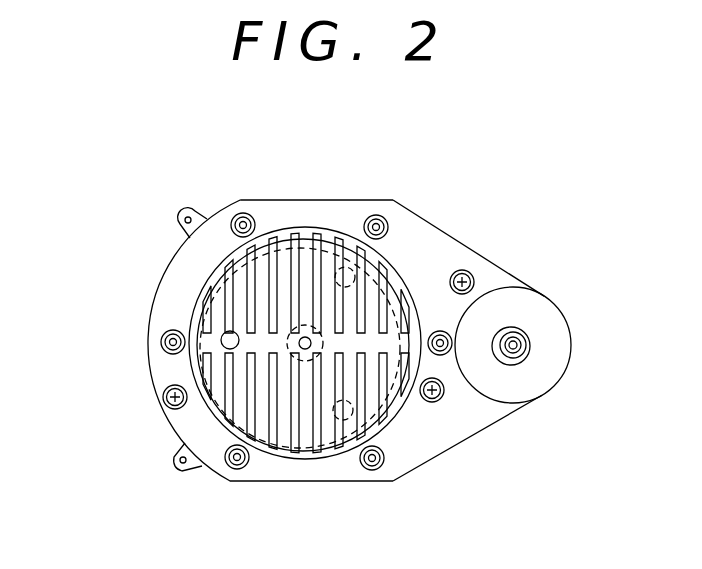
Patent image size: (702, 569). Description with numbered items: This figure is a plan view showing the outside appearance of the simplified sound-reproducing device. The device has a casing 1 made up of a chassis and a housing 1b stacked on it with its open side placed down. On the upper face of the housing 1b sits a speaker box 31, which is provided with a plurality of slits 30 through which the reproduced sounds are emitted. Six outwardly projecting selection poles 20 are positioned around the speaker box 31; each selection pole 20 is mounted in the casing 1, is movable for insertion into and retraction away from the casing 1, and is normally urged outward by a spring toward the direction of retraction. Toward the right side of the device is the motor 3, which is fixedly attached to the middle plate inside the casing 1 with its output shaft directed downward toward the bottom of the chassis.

The casing 1 is at (416, 232).
The housing 1b is at (498, 262).
The motor 3 is at (530, 335).
The selection poles 20 is at (244, 214).
The slits 30 is at (299, 238).
The speaker box 31 is at (403, 282).